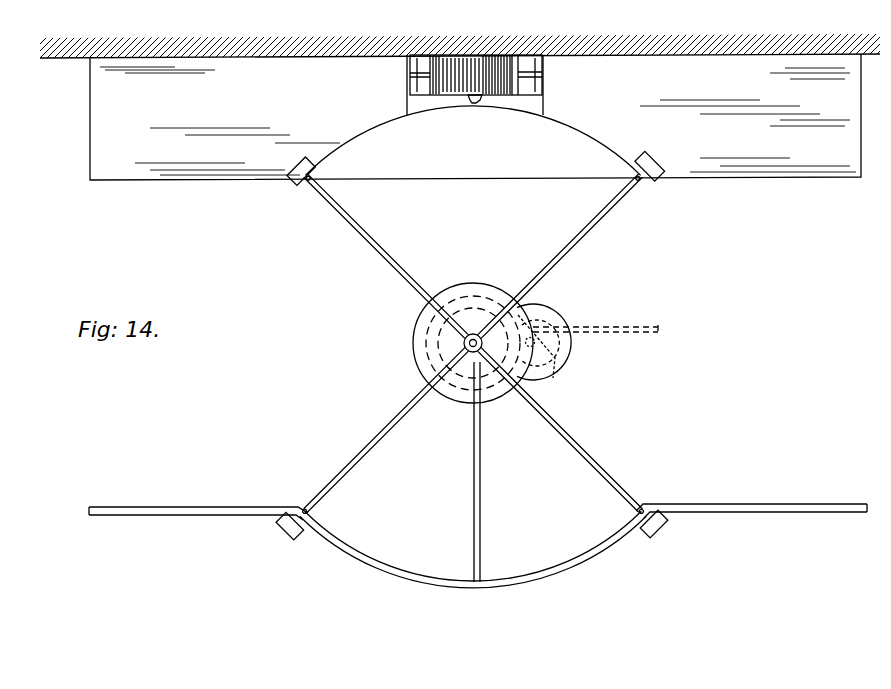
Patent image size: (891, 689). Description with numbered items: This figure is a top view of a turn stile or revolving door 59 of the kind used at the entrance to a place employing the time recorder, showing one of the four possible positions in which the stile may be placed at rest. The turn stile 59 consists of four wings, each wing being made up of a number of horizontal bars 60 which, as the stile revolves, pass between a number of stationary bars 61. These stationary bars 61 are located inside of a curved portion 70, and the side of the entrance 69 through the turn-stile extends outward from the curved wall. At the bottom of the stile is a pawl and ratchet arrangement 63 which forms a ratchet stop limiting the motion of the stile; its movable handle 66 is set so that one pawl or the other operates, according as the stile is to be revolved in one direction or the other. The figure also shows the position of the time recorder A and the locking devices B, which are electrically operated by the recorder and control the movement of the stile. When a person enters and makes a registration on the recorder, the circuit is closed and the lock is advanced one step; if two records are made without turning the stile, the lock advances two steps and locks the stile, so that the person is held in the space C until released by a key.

The time recorder A is at (472, 73).
The locking devices B is at (298, 167).
The space C is at (472, 152).
The turn stile 59 is at (464, 343).
The bars 60 is at (566, 251).
The stationary bars 61 is at (482, 469).
The pawl and ratchet arrangement 63 is at (501, 395).
The handle 66 is at (611, 319).
The side of the entrance 69 is at (177, 510).
The curved portion 70 is at (565, 572).